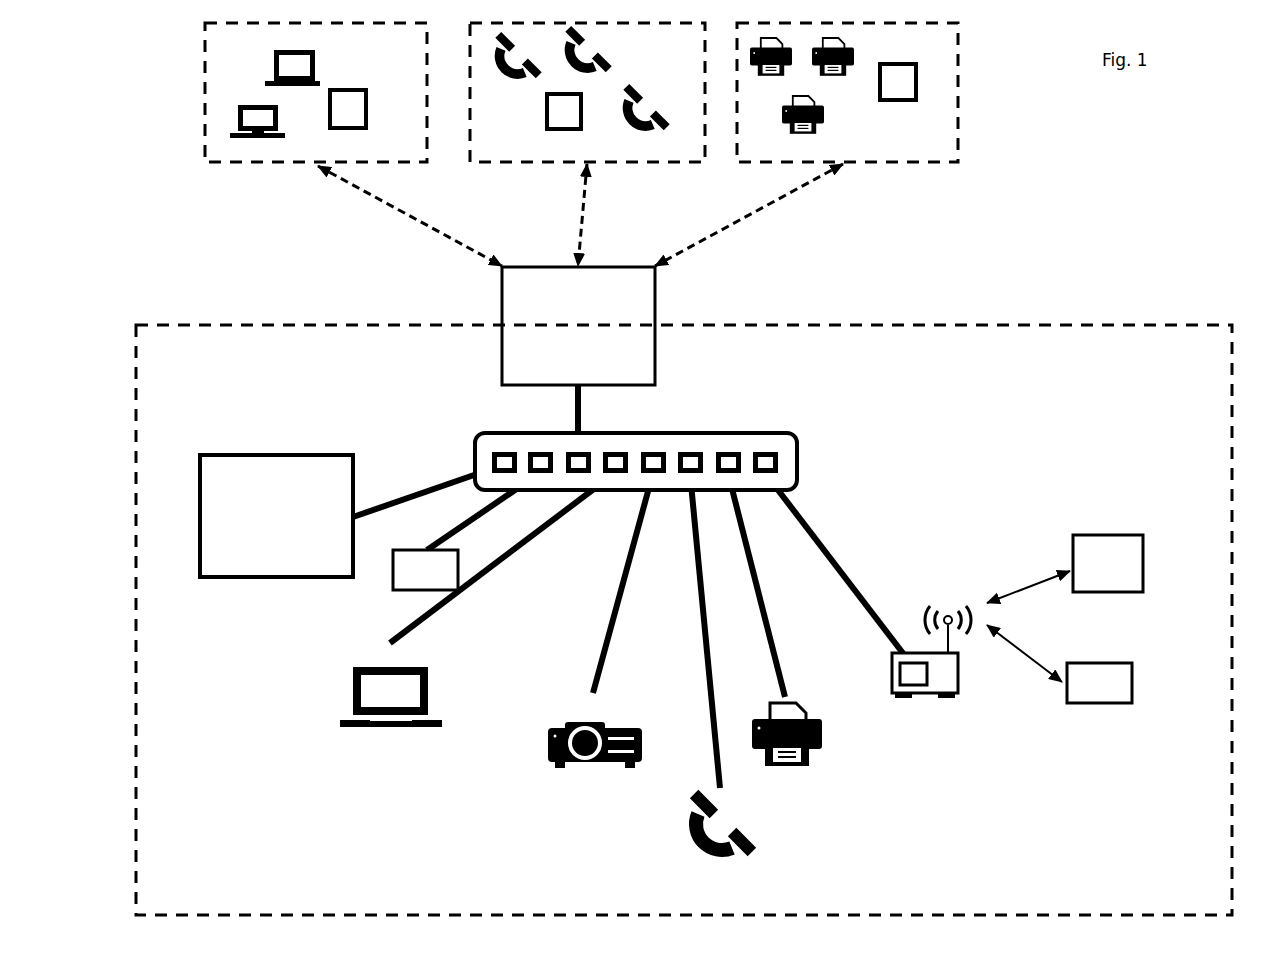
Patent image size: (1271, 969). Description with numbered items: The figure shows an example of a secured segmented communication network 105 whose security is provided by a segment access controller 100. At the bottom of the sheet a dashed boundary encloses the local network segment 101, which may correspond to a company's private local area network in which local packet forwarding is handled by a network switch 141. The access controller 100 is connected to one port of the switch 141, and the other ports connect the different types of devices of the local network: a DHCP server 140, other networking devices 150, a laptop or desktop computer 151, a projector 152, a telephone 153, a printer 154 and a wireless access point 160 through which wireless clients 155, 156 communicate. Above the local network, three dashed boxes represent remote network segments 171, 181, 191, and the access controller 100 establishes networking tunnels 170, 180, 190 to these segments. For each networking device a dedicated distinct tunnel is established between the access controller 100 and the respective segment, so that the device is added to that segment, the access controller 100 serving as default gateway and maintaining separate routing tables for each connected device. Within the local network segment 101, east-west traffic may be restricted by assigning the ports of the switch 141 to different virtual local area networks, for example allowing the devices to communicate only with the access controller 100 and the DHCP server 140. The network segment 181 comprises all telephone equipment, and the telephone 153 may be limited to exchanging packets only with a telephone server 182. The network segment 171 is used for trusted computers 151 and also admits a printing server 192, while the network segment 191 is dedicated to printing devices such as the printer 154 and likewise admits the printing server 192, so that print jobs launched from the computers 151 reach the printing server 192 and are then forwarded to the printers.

The segment access controller 100 is at (578, 326).
The local network segment 101 is at (684, 620).
The secured segmented communication network 105 is at (1180, 203).
The DHCP server 140 is at (276, 516).
The network switch 141 is at (798, 461).
The networking device 150 is at (425, 570).
The computer 151 is at (250, 138).
The projector 152 is at (560, 766).
The telephone 153 is at (640, 132).
The printer 154 is at (800, 136).
The wireless client 155 is at (1108, 563).
The wireless client 156 is at (1099, 683).
The wireless access point 160 is at (905, 700).
The networking tunnel 170 is at (395, 205).
The network segment 171 is at (316, 92).
The networking tunnel 180 is at (601, 215).
The network segment 181 is at (587, 92).
The telephone server 182 is at (556, 130).
The networking tunnel 190 is at (740, 220).
The network segment 191 is at (847, 92).
The printing server 192 is at (350, 128).